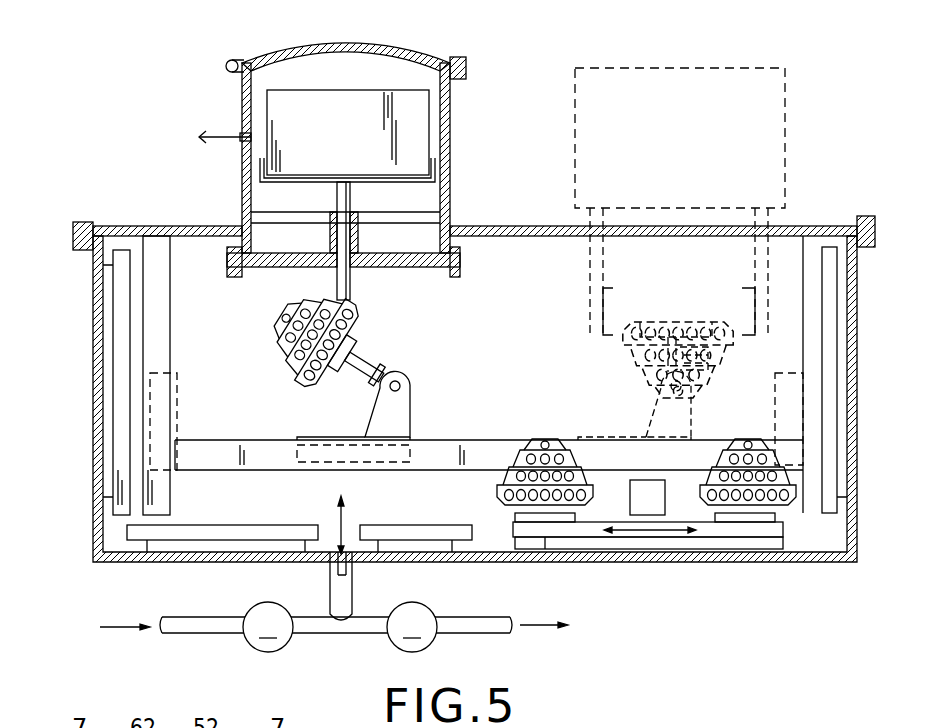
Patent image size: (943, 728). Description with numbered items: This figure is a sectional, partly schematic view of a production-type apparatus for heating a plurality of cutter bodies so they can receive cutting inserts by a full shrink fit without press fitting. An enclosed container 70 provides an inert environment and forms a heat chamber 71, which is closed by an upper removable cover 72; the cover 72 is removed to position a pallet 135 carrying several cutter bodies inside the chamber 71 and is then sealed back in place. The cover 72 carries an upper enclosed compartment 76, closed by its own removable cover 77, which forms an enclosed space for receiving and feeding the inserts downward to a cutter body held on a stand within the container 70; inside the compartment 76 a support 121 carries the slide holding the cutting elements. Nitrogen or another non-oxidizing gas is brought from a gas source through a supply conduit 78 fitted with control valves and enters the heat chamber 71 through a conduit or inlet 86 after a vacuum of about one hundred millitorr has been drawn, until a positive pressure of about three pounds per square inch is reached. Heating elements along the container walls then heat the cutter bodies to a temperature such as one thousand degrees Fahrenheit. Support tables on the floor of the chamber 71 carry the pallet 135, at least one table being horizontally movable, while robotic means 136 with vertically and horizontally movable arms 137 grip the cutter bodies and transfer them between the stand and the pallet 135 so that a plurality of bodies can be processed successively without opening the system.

The enclosed container 70 is at (86, 309).
The heat chamber 71 is at (532, 354).
The upper removable cover 72 is at (181, 223).
The upper enclosed compartment 76 is at (454, 126).
The removable cover 77 is at (296, 60).
The supply conduit 78 is at (222, 628).
The conduit 86 is at (353, 588).
The support 121 is at (435, 178).
The pallet 135 is at (700, 515).
The robotic means 136 is at (698, 146).
The movable arms 137 is at (600, 296).